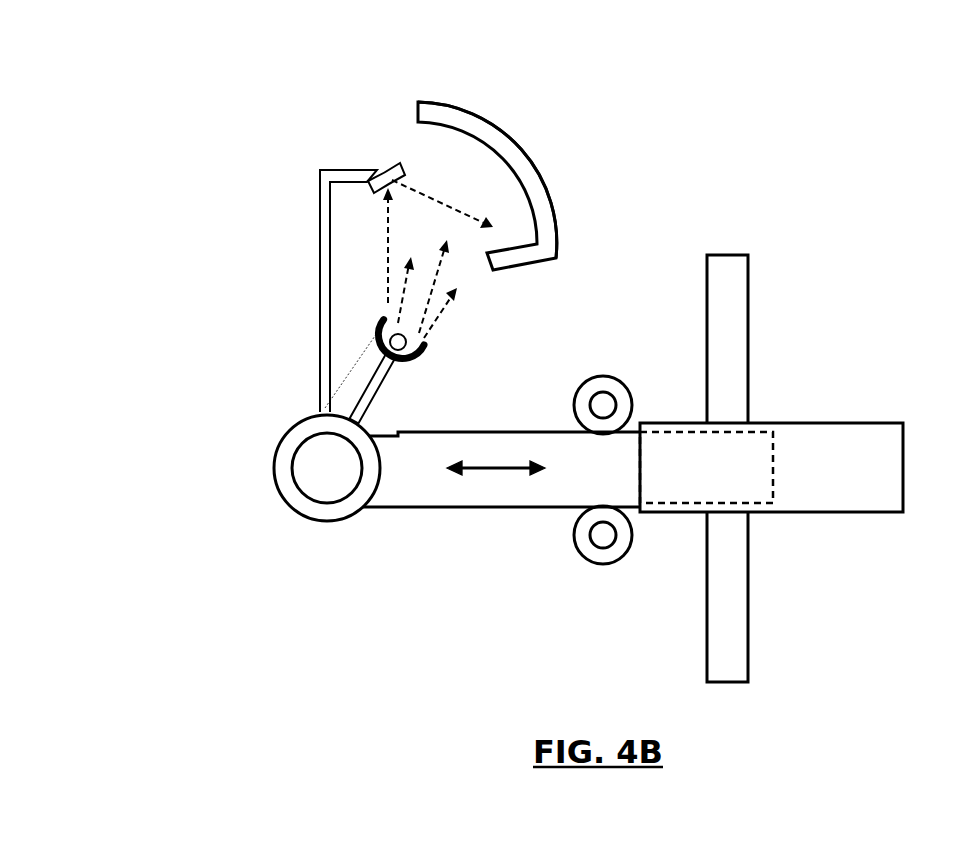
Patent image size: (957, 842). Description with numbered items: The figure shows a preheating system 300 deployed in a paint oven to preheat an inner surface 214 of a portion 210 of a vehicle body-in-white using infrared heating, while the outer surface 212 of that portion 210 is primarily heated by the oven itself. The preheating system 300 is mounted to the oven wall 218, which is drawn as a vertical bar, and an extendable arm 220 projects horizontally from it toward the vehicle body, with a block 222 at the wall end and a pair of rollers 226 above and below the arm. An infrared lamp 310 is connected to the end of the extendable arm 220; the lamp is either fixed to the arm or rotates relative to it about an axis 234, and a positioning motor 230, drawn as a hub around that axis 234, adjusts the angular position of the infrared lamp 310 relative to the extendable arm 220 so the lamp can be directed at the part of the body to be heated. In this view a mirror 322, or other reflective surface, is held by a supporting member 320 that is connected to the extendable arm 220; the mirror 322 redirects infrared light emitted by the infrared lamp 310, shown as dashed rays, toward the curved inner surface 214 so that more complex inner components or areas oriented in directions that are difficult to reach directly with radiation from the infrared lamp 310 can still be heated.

The portion of a vehicle BIW 210 is at (529, 158).
The outer surface 212 is at (540, 160).
The inner surface 214 is at (479, 128).
The oven wall 218 is at (715, 617).
The extendable arm 220 is at (478, 510).
The arm extension block 222 is at (845, 423).
The guide rollers 226 is at (618, 384).
The positioning motor 230 is at (306, 522).
The axis 234 is at (295, 465).
The preheating system 300 is at (311, 363).
The infrared lamp 310 is at (370, 382).
The supporting member 320 is at (322, 252).
The mirror 322 is at (380, 168).